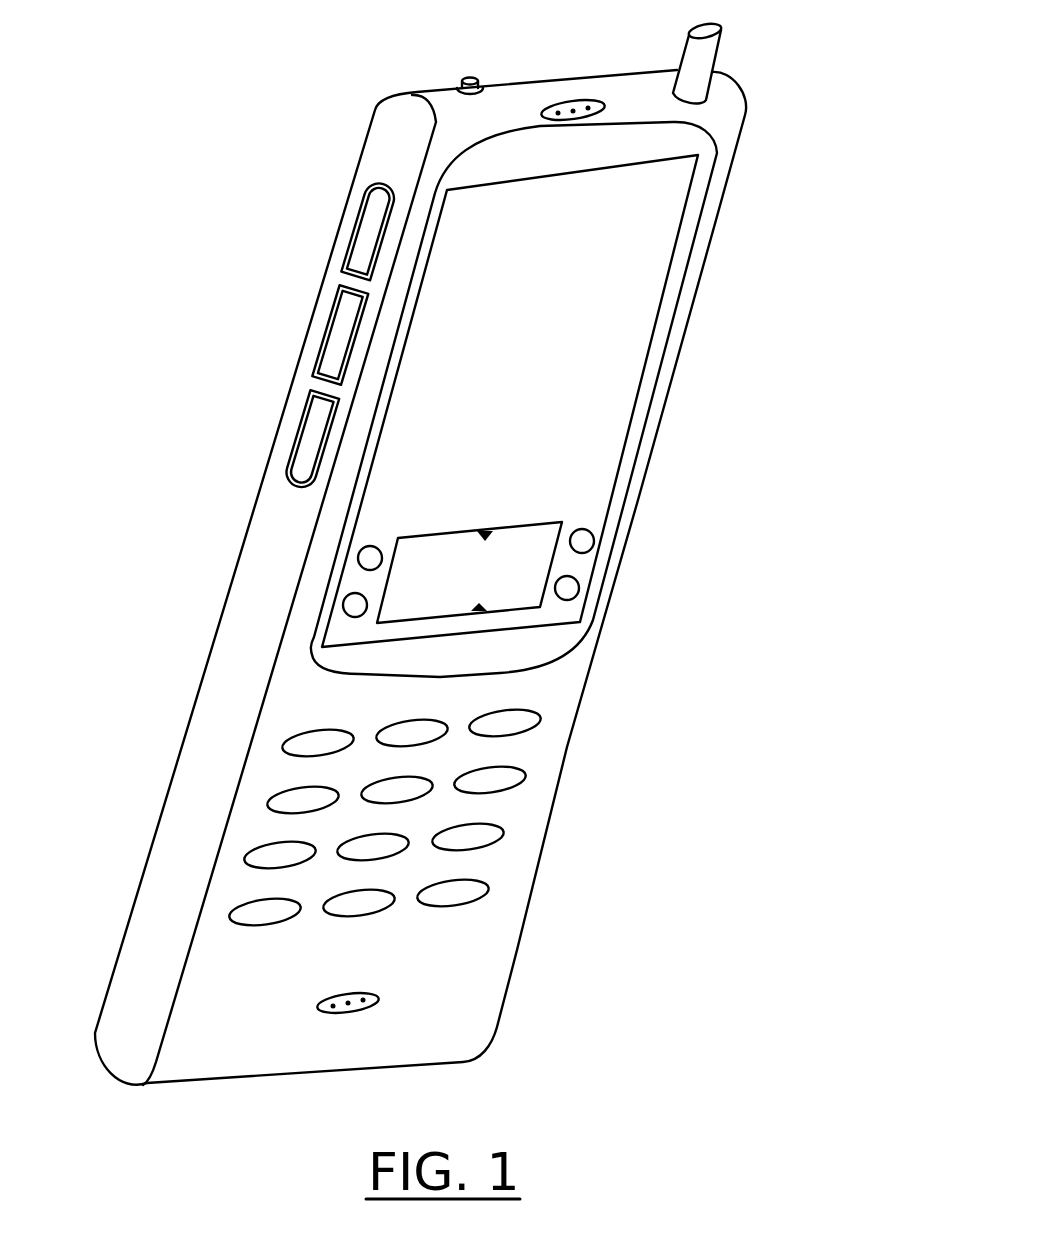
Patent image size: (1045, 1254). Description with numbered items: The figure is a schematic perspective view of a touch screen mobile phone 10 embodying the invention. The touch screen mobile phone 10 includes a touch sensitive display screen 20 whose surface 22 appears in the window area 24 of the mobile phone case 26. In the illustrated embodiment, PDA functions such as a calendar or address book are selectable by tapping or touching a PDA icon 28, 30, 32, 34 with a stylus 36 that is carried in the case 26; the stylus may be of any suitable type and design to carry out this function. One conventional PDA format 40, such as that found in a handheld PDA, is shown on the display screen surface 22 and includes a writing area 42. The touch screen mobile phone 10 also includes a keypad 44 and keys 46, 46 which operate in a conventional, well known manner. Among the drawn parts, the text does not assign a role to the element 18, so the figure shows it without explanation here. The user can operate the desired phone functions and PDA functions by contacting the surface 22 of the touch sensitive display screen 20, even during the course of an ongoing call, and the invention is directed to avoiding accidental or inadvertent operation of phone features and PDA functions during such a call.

The touch screen mobile phone 10 is at (479, 544).
The side panel with side keys 18 is at (245, 558).
The touch sensitive display screen 20 is at (597, 401).
The surface 22 is at (500, 371).
The window area 24 is at (664, 345).
The mobile phone case 26 is at (567, 747).
The PDA icon 28 is at (590, 530).
The PDA icon 30 is at (579, 583).
The PDA icon 32 is at (343, 604).
The PDA icon 34 is at (358, 558).
The stylus 36 is at (475, 68).
The PDA format 40 is at (607, 553).
The writing area 42 is at (494, 590).
The keypad 44 is at (376, 803).
The keys 46 is at (512, 782).